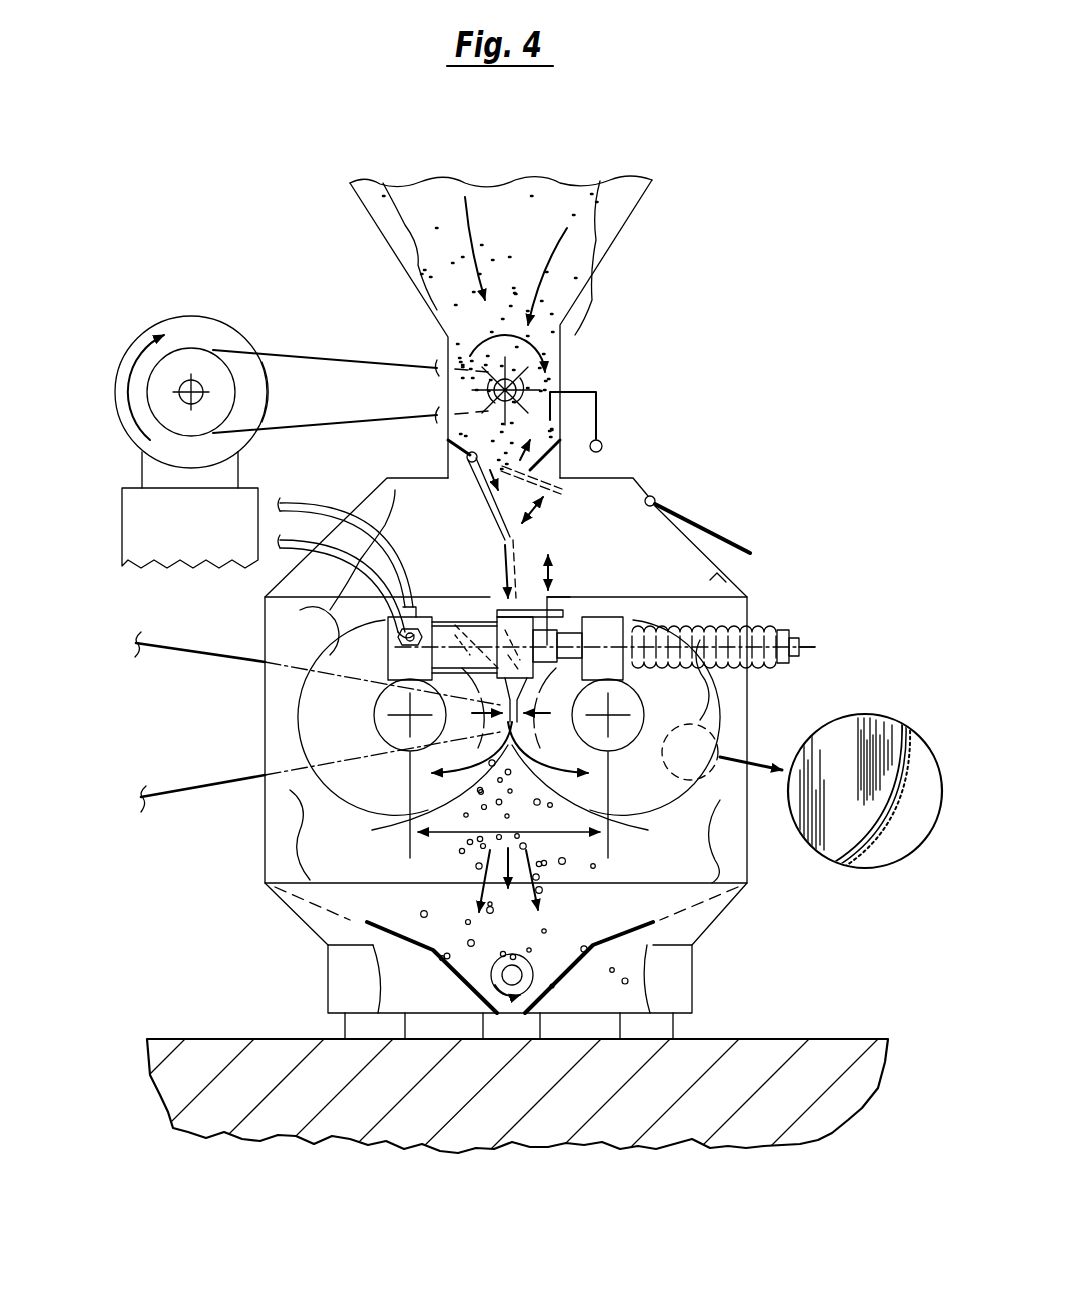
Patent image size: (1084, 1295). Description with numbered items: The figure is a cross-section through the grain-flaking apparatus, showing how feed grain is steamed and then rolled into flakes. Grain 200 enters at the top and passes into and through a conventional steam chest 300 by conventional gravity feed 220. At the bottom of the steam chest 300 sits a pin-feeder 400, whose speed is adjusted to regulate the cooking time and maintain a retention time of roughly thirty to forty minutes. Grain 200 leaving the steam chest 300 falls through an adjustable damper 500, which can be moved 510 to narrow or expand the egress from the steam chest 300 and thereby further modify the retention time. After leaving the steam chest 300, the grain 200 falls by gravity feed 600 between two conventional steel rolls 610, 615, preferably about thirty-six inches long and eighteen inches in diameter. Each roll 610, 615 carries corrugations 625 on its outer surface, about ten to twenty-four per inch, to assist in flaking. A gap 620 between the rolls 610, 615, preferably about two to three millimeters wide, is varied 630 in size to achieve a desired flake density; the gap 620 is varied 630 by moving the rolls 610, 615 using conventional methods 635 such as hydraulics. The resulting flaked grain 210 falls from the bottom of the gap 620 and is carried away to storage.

The grain 200 is at (557, 214).
The flaked grain 210 is at (470, 930).
The gravity feed 220 is at (552, 268).
The steam chest 300 is at (367, 213).
The pin-feeder 400 is at (517, 382).
The adjustable damper 500 is at (490, 506).
The movement of the damper 510 is at (525, 512).
The gravity feed 600 is at (508, 585).
The steel roll 610 is at (330, 722).
The steel roll 615 is at (740, 706).
The gap 620 is at (613, 805).
The corrugations 625 is at (895, 768).
The variation of the gap 630 is at (560, 700).
The conventional methods of moving the rolls 635 is at (755, 632).